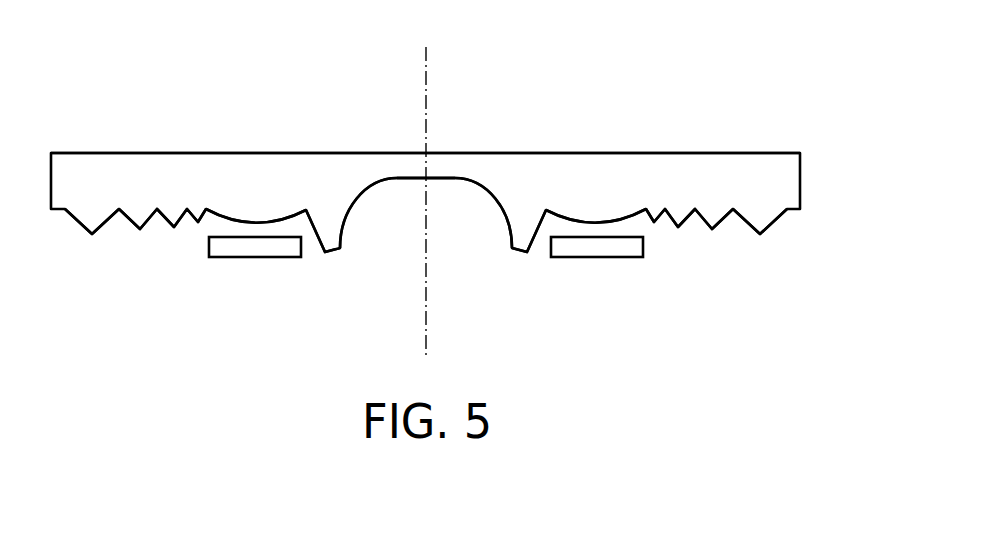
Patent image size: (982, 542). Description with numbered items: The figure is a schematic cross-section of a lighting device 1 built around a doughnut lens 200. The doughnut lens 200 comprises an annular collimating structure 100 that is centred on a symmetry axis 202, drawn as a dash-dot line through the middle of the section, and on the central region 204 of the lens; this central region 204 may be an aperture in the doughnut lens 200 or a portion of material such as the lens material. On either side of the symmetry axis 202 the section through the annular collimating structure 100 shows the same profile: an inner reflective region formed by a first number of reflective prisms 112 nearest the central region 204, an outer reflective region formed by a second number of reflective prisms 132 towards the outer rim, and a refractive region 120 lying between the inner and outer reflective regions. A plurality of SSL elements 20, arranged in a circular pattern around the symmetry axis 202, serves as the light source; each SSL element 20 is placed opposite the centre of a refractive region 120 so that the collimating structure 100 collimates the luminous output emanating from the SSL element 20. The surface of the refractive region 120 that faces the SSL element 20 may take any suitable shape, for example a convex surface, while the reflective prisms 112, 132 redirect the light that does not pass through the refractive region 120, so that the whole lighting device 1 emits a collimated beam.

The lighting device 1 is at (770, 74).
The solid state lighting element 20 is at (256, 257).
The collimating structure 100 is at (683, 183).
The reflective prisms 112 is at (345, 238).
The refractive region 120 is at (252, 198).
The reflective prisms 132 is at (147, 217).
The doughnut lens 200 is at (385, 153).
The symmetry axis 202 is at (427, 57).
The central region 204 is at (438, 180).